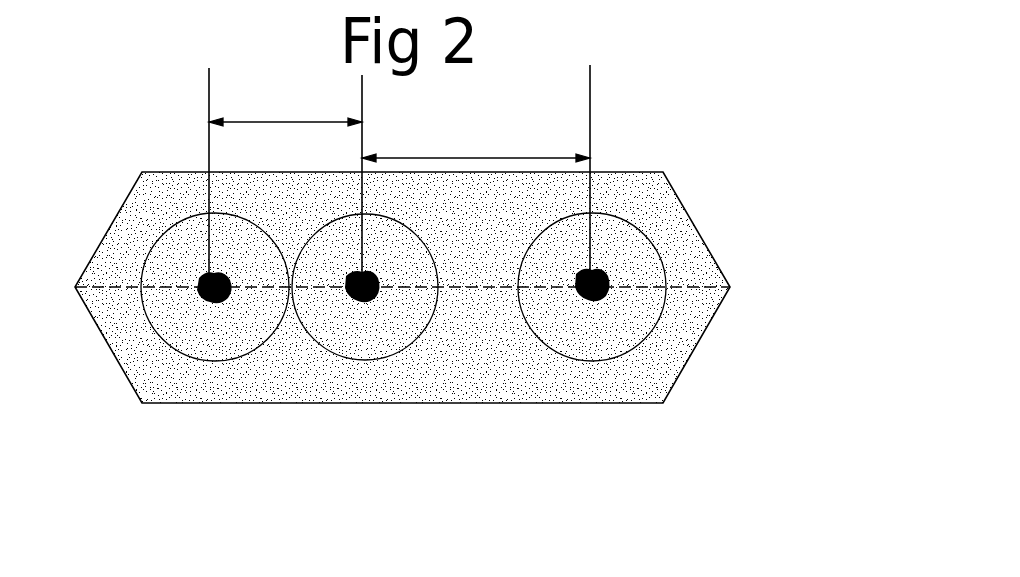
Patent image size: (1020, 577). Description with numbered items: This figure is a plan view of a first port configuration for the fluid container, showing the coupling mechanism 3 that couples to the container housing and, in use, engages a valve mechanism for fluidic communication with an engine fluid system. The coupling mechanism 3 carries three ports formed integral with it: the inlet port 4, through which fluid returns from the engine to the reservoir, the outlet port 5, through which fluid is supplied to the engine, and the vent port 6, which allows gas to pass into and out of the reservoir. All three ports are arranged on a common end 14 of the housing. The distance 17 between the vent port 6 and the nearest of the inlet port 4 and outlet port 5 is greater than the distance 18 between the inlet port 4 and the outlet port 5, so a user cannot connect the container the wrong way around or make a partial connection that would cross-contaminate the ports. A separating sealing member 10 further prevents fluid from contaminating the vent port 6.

The coupling mechanism 3 is at (292, 418).
The inlet port 4 is at (153, 247).
The outlet port 5 is at (405, 340).
The vent port 6 is at (660, 310).
The separating sealing member 10 is at (638, 165).
The common end 14 is at (738, 224).
The distance between vent port and nearest other port 17 is at (476, 147).
The distance between inlet port and outlet port 18 is at (285, 111).